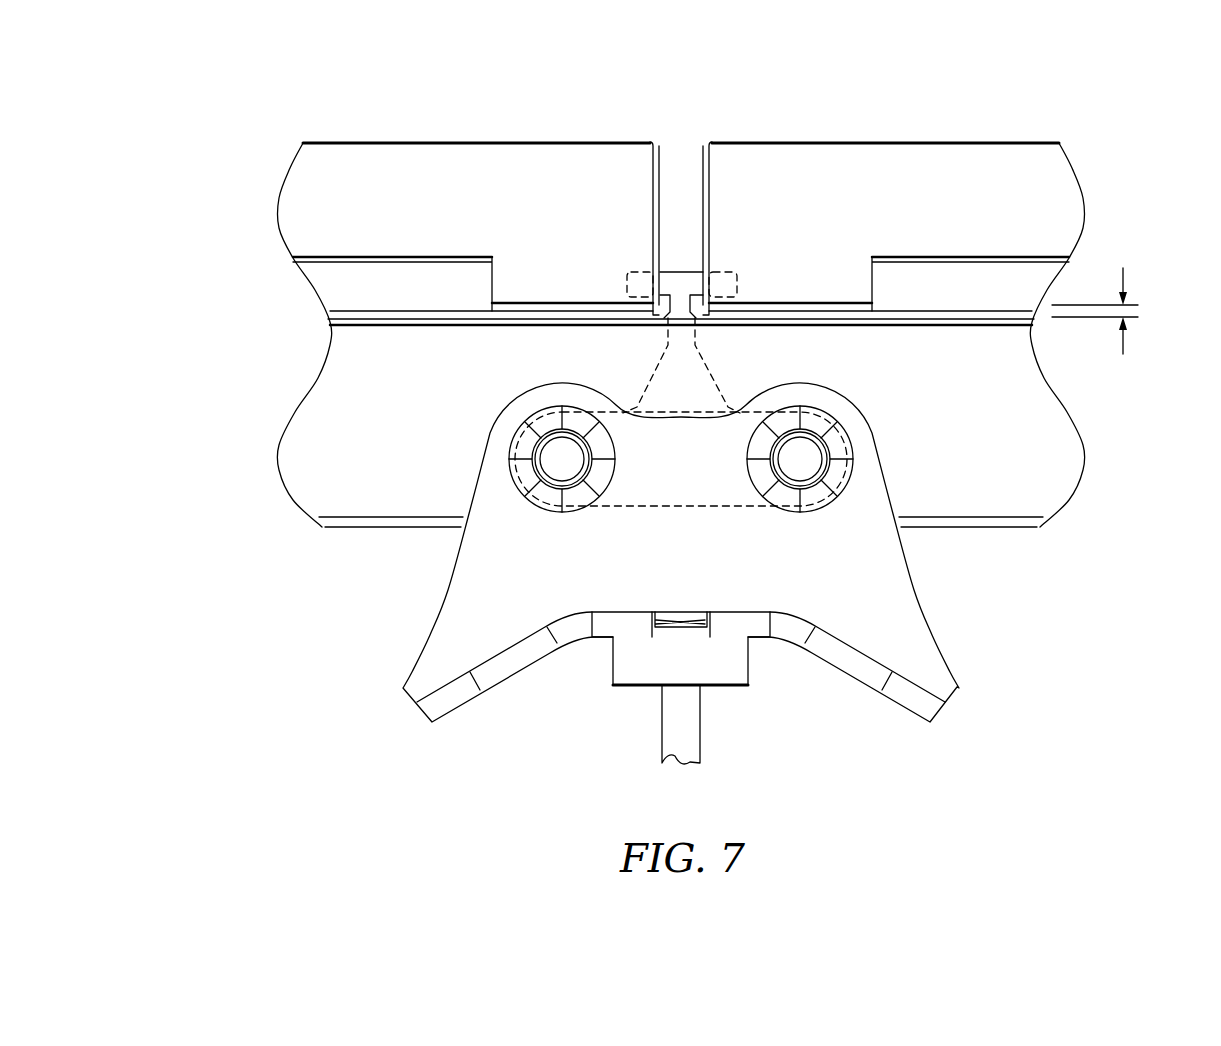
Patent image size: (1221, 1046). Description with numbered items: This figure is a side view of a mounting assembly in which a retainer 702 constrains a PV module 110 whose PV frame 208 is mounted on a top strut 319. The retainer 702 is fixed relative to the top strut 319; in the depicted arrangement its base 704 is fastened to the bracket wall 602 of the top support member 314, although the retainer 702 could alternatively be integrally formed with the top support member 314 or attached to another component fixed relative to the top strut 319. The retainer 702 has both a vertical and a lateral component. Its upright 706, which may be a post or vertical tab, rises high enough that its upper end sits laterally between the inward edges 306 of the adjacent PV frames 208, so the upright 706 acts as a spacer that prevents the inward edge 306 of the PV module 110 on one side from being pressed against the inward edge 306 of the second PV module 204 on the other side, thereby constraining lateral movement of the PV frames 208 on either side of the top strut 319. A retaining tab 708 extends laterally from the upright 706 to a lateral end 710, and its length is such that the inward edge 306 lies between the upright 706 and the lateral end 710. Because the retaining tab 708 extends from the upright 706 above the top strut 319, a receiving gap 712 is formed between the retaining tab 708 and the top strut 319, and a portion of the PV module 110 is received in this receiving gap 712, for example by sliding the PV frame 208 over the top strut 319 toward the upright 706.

The PV module 110 is at (1015, 137).
The second PV module 204 is at (370, 142).
The PV frame 208 is at (340, 207).
The inward edge 306 is at (698, 173).
The top support member 314 is at (945, 641).
The top strut 319 is at (1005, 477).
The bracket wall 602 is at (488, 586).
The retainer 702 is at (848, 445).
The base 704 is at (660, 447).
The upright 706 is at (680, 307).
The retaining tab 708 is at (633, 277).
The lateral end 710 is at (737, 284).
The receiving gap 712 is at (1126, 310).